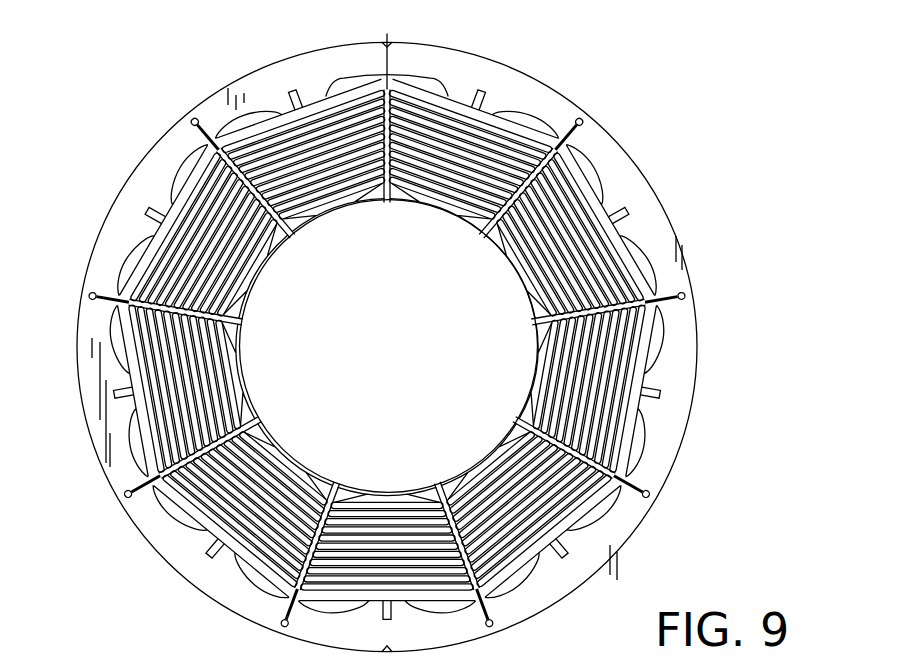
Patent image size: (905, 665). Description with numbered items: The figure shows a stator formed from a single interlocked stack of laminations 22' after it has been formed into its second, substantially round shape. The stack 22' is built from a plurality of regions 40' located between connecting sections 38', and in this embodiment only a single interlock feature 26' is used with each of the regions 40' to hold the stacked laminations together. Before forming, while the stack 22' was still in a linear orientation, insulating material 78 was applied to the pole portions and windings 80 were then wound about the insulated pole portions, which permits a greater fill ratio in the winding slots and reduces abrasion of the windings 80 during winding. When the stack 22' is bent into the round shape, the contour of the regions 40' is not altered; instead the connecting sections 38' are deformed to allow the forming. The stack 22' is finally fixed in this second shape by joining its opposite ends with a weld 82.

The interlocked stack of laminations 22' is at (396, 326).
The interlock feature 26' is at (352, 363).
The connecting sections 38' is at (377, 372).
The regions 40' is at (400, 346).
The insulating material 78 is at (540, 330).
The windings 80 is at (437, 185).
The weld 82 is at (391, 34).